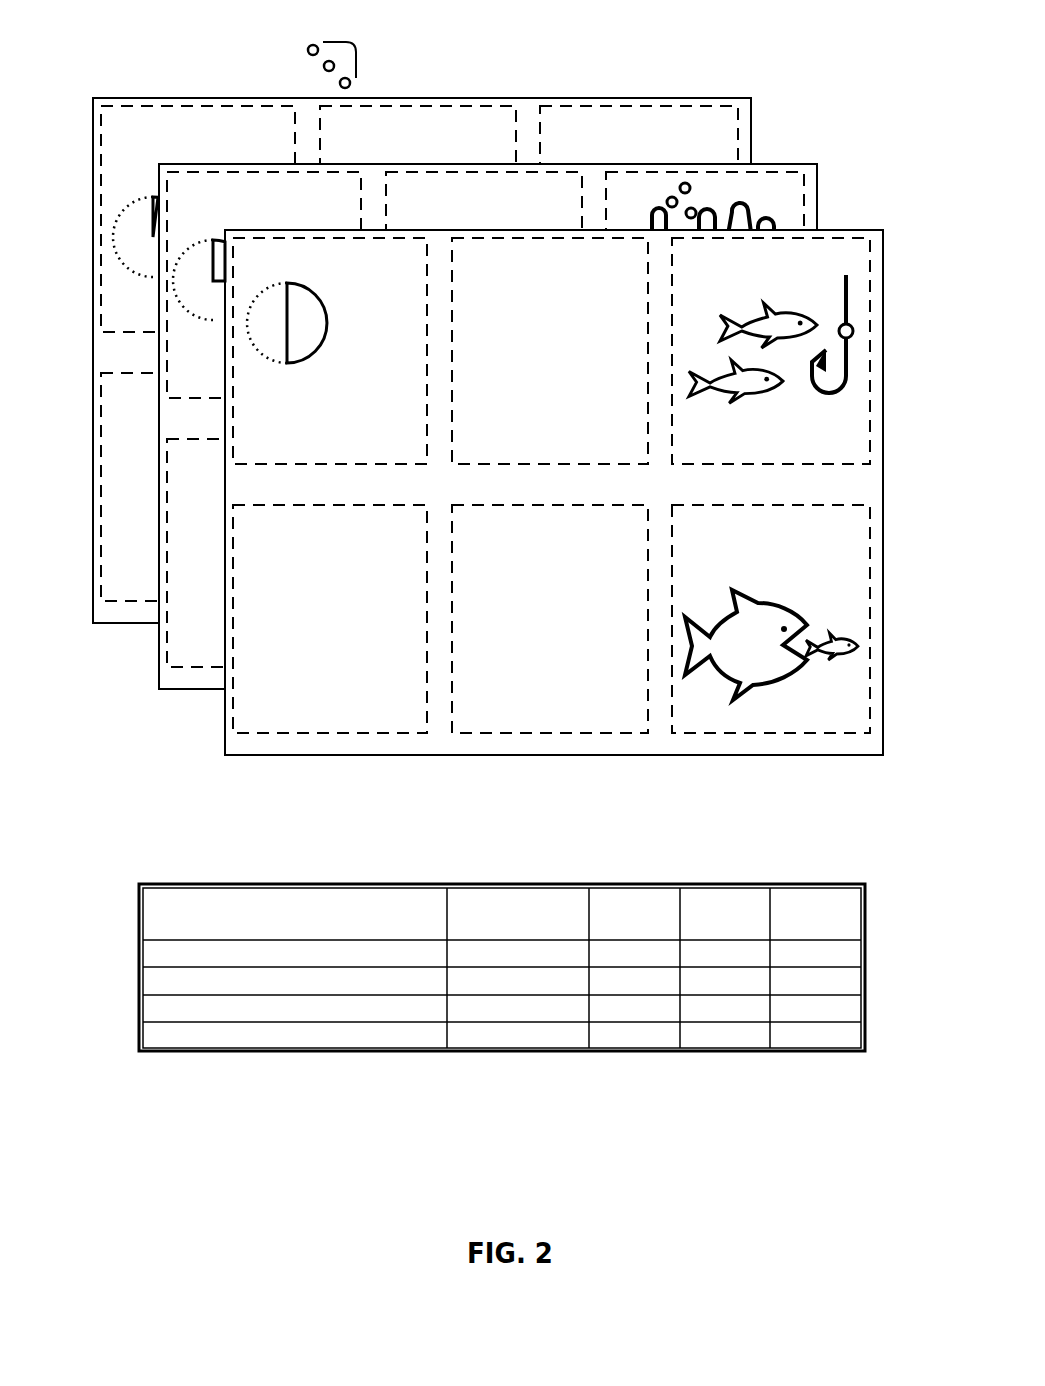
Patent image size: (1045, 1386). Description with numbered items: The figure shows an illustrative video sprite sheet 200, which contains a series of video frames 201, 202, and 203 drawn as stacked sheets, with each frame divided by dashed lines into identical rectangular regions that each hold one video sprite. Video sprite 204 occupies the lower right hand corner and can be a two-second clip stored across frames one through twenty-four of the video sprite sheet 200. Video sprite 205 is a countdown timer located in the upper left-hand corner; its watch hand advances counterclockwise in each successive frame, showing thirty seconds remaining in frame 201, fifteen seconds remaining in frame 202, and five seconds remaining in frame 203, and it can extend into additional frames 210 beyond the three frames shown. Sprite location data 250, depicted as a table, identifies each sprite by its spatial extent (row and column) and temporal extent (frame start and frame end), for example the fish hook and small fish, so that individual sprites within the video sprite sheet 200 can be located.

The video sprite sheet 200 is at (139, 41).
The video frame 201 is at (590, 536).
The video frame 202 is at (817, 208).
The video frame 203 is at (750, 138).
The video sprite 204 is at (751, 712).
The video sprite 205 is at (239, 398).
The additional frames 210 is at (358, 45).
The sprite location data 250 is at (843, 884).